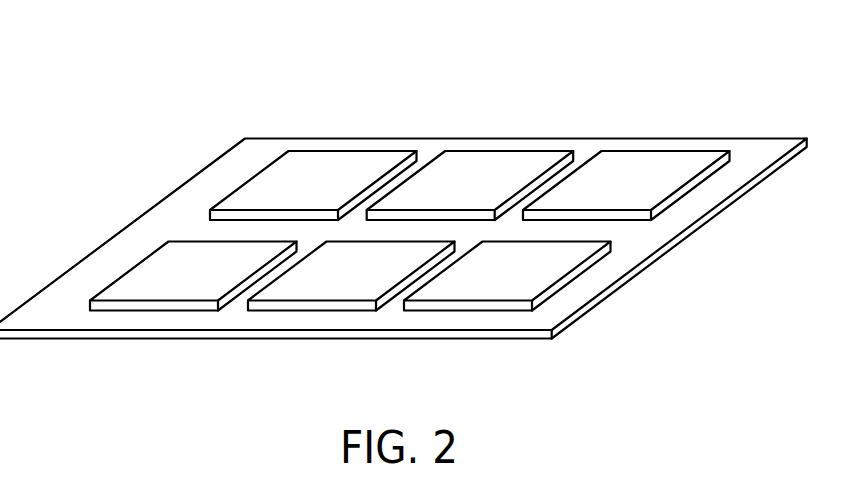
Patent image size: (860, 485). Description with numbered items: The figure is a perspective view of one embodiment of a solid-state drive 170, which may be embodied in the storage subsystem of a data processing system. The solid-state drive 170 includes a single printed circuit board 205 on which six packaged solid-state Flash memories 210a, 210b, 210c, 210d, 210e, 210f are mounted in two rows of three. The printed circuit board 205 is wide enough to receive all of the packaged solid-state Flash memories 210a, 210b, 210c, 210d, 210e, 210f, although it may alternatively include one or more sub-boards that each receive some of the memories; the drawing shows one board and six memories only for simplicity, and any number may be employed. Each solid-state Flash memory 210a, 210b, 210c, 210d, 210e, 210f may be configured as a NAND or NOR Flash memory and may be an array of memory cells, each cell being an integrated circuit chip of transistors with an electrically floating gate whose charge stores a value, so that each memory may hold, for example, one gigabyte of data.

The solid-state drive 170 is at (62, 64).
The printed circuit board 205 is at (200, 172).
The solid-state Flash memory 210a is at (342, 155).
The solid-state Flash memory 210b is at (490, 155).
The solid-state Flash memory 210c is at (652, 155).
The solid-state Flash memory 210d is at (163, 308).
The solid-state Flash memory 210e is at (332, 308).
The solid-state Flash memory 210f is at (456, 308).